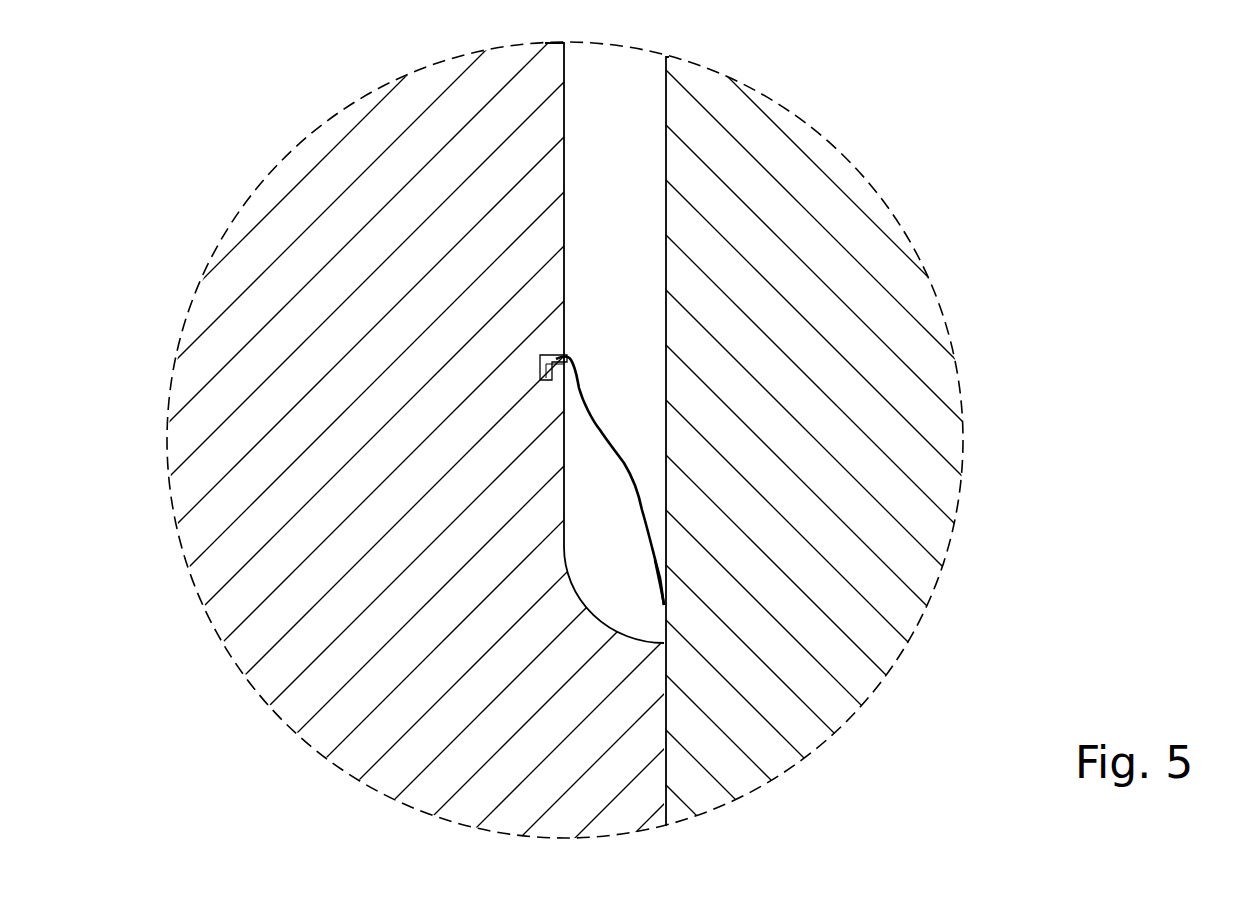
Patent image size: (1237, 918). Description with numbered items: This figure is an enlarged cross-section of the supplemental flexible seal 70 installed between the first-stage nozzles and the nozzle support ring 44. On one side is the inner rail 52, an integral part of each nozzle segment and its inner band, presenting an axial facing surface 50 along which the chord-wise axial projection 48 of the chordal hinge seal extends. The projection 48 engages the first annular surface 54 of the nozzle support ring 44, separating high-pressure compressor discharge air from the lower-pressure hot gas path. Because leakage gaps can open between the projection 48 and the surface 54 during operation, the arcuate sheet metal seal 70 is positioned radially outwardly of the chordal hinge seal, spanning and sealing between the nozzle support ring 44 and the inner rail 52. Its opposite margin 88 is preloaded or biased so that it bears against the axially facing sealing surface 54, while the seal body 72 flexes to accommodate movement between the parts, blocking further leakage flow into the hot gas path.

The nozzle support ring 44 is at (827, 703).
The axial projection 48 is at (612, 782).
The axial facing surface 50 is at (565, 102).
The inner rail 52 is at (221, 453).
The first annular surface 54 is at (666, 105).
The supplemental seal 70 is at (613, 359).
The flexible member 72 is at (617, 453).
The opposite margin 88 is at (657, 578).